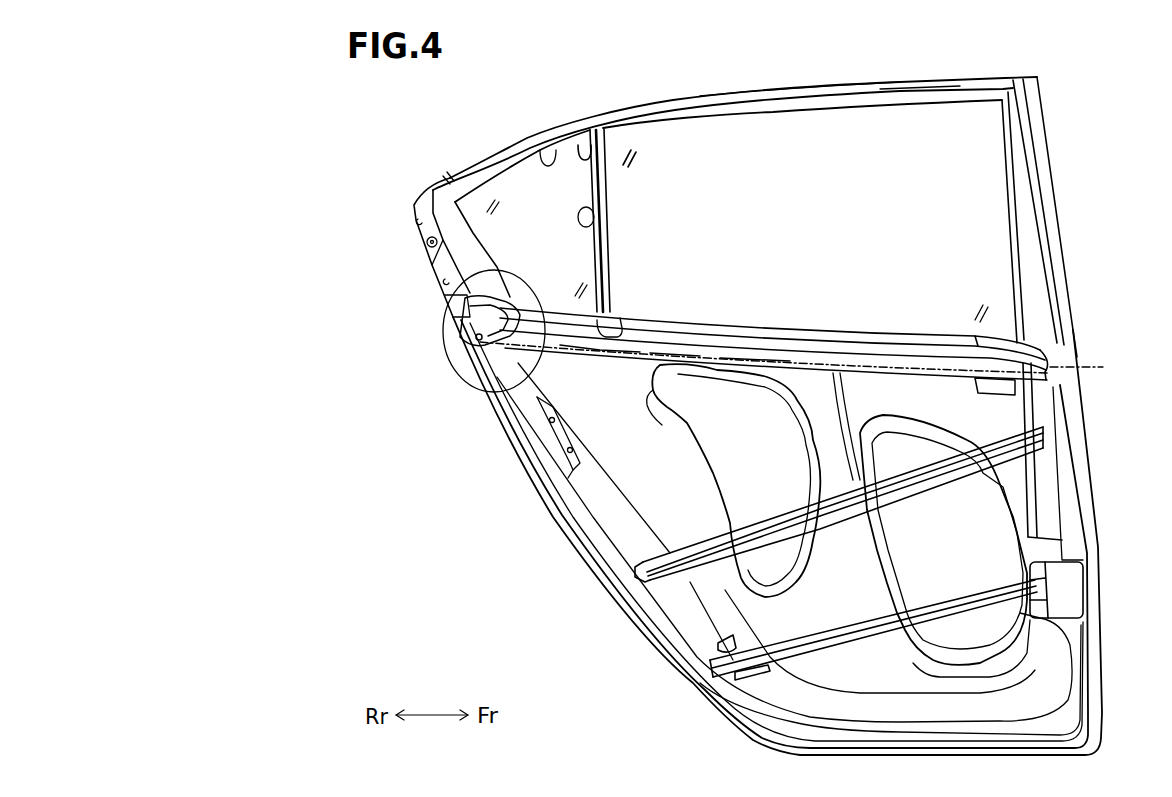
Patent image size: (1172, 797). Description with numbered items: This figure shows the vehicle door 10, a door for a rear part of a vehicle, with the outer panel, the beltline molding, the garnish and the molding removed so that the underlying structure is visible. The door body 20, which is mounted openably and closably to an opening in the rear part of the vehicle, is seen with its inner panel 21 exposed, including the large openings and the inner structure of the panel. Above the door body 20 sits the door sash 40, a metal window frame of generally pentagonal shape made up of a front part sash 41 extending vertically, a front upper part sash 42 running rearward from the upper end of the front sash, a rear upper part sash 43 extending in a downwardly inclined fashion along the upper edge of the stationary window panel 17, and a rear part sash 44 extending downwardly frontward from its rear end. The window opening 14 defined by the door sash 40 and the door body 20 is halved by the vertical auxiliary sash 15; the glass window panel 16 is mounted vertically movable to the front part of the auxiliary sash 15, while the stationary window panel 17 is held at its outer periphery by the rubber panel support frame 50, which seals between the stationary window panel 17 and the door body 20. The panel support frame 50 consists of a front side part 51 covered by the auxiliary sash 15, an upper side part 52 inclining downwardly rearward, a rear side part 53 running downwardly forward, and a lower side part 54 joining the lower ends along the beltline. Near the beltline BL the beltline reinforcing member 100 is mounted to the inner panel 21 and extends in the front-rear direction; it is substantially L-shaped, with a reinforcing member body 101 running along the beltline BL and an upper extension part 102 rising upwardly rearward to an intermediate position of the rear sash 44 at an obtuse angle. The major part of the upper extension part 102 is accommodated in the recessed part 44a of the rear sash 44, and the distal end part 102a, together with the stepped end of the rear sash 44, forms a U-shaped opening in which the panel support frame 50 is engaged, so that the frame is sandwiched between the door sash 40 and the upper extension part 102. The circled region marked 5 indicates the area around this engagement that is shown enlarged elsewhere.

The vehicle door 10 is at (288, 122).
The window opening 14 is at (804, 233).
The auxiliary sash 15 is at (580, 146).
The window panel 16 is at (920, 124).
The stationary window panel 17 is at (541, 192).
The door body 20 is at (545, 512).
The inner panel 21 is at (617, 600).
The door sash 40 is at (820, 77).
The front part sash 41 is at (1023, 210).
The front upper part sash 42 is at (750, 87).
The rear upper part sash 43 is at (487, 158).
The rear part sash 44 is at (430, 267).
The recessed part 44a is at (445, 297).
The panel support frame 50 is at (447, 181).
The front side part 51 is at (595, 215).
The upper side part 52 is at (549, 149).
The rear side part 53 is at (420, 236).
The lower side part 54 is at (607, 307).
The beltline reinforcing member 100 is at (847, 340).
The reinforcing member body 101 is at (915, 340).
The upper extension part 102 is at (468, 332).
The distal end part 102a is at (487, 385).
The detail region of FIG. 5 is at (450, 363).
The beltline BL is at (1103, 367).